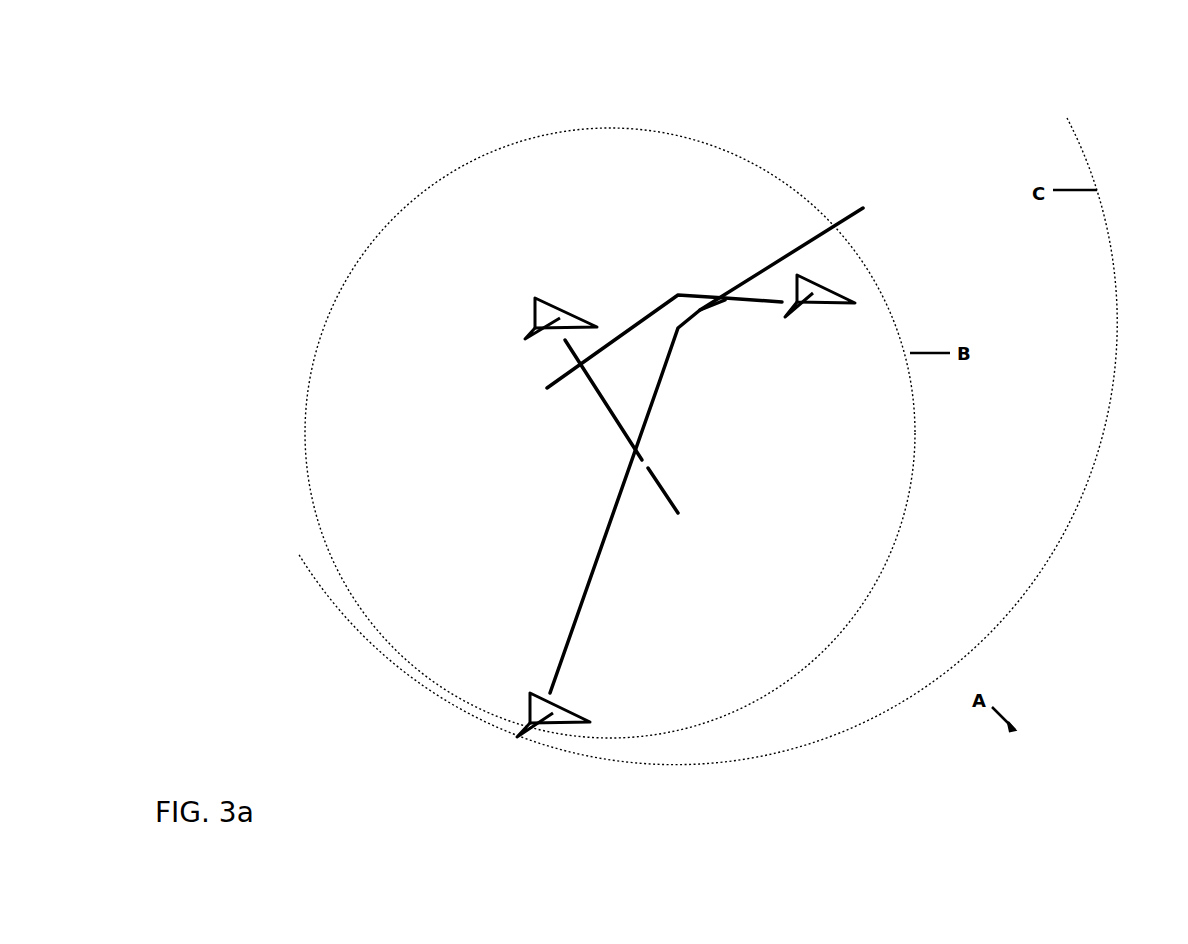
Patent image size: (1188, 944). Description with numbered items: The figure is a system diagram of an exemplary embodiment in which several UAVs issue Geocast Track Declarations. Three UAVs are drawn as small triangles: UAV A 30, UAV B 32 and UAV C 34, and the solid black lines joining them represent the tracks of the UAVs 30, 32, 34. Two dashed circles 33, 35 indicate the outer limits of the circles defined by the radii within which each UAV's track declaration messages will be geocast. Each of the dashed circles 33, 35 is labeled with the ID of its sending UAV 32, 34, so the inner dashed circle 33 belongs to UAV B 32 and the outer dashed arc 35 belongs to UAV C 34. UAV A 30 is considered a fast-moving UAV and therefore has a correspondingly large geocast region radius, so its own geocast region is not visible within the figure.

The UAV A 30 is at (580, 708).
The UAV B 32 is at (535, 298).
The dashed circle 33 is at (795, 182).
The UAV C 34 is at (823, 324).
The dashed circle 35 is at (1067, 118).